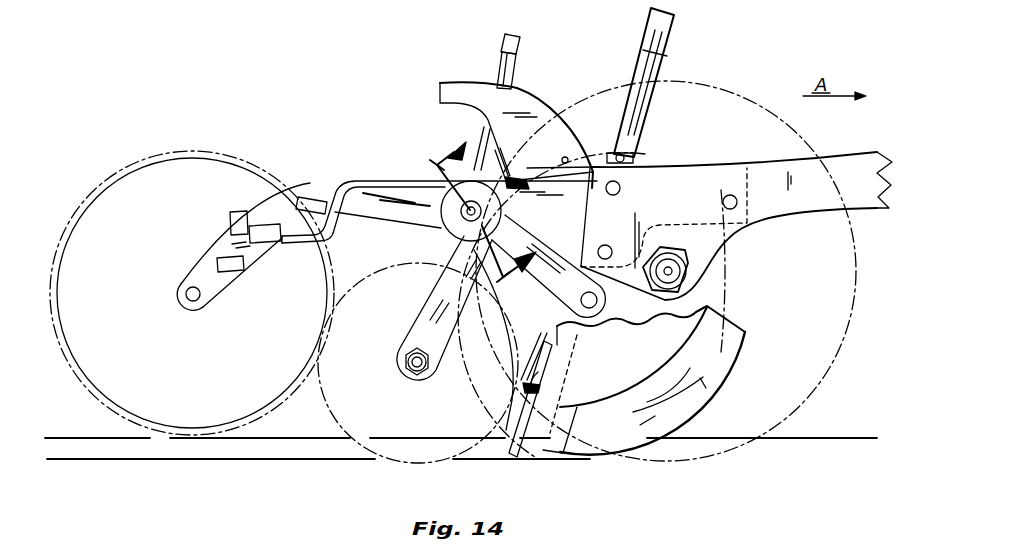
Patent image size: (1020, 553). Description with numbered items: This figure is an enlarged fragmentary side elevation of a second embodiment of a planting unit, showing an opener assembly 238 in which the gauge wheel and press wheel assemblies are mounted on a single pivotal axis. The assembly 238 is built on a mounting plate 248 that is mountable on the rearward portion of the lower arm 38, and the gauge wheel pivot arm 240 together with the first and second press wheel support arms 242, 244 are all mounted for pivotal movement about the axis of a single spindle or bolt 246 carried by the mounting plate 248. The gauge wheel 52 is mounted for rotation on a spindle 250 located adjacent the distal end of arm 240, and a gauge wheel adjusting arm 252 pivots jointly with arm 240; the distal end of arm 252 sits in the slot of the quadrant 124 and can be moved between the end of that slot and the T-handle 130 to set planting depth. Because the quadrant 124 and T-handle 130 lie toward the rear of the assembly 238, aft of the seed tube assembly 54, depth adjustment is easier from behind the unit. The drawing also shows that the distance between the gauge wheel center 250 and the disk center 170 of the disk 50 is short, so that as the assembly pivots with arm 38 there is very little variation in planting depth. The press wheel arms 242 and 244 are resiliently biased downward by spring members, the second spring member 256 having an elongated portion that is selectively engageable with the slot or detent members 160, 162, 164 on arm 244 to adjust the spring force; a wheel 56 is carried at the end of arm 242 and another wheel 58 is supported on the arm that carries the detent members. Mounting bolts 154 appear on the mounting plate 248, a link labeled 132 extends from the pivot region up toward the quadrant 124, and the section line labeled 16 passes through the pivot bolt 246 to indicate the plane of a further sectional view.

The section line 16- 16 is at (477, 221).
The lower arm 38 is at (838, 146).
The gauge wheel 50 is at (820, 388).
The gauge wheel 52 is at (735, 345).
The seed tube assembly 54 is at (718, 396).
The press wheel 56 is at (405, 465).
The front wheel 58 is at (200, 450).
The quadrant 124 is at (550, 113).
The T-handle 130 is at (505, 50).
The link rod 132 is at (488, 140).
The mounting bolts 154 is at (620, 188).
The slot or detent member 160 is at (218, 248).
The slot or detent member 162 is at (264, 225).
The slot or detent member 164 is at (310, 198).
The disk center 170 is at (672, 272).
The opener assembly 238 is at (780, 462).
The gauge wheel pivot arm 240 is at (558, 302).
The first press wheel support arm 242 is at (410, 318).
The second press wheel support arm 244 is at (349, 180).
The spindle or bolt 246 is at (462, 218).
The mounting plate 248 is at (760, 222).
The spindle 250 is at (592, 310).
The gauge wheel adjusting arm 252 is at (527, 82).
The second spring member 256 is at (407, 180).